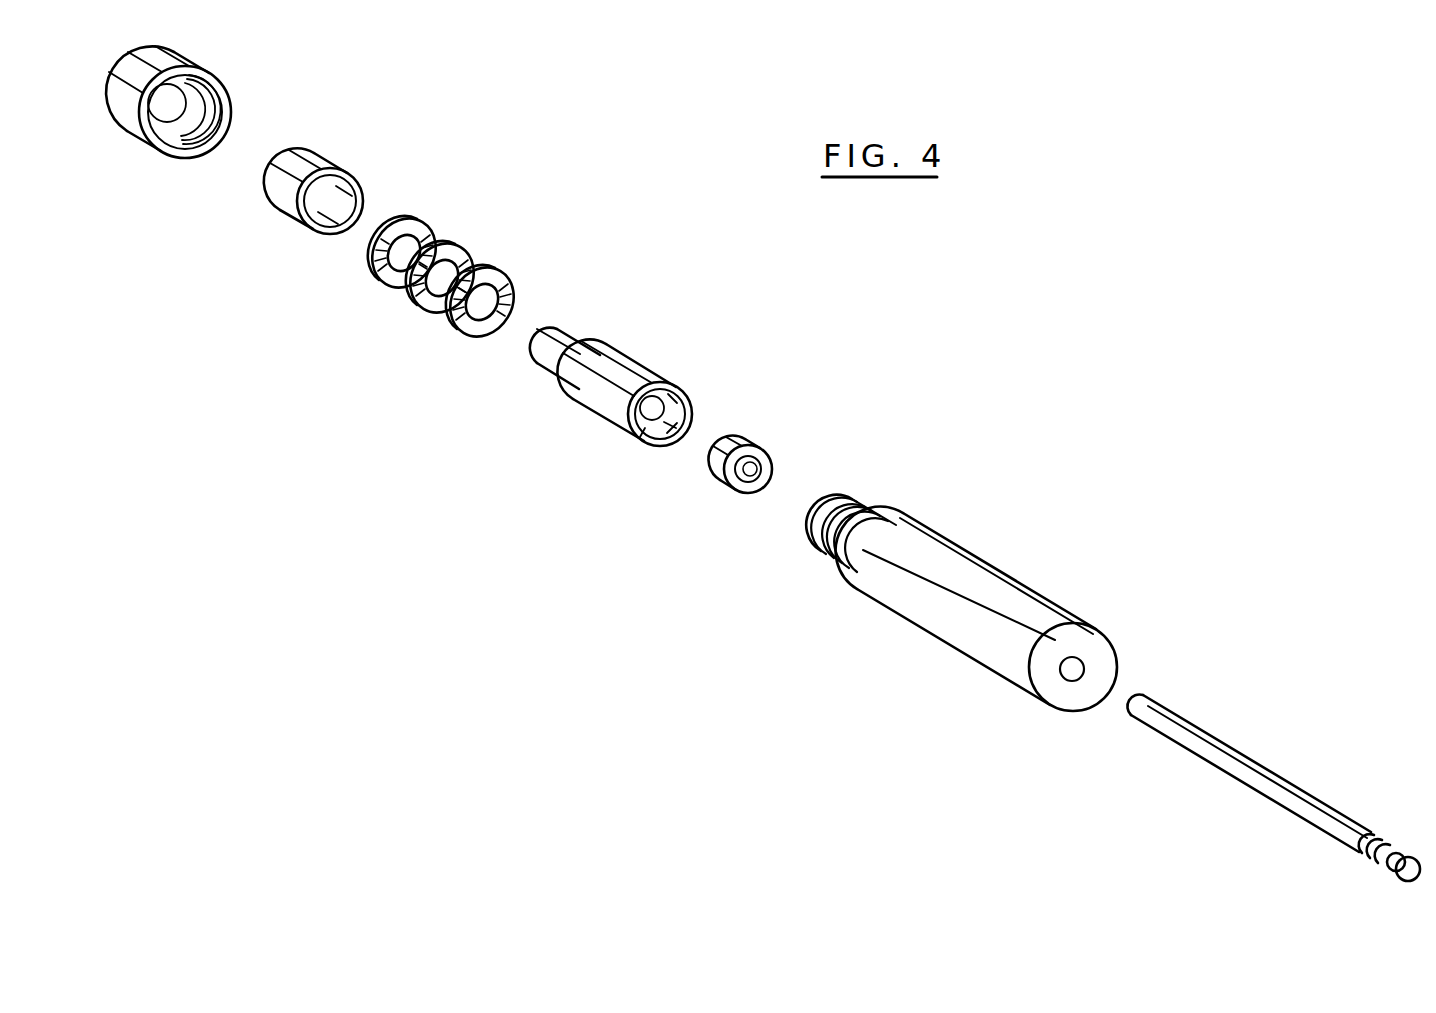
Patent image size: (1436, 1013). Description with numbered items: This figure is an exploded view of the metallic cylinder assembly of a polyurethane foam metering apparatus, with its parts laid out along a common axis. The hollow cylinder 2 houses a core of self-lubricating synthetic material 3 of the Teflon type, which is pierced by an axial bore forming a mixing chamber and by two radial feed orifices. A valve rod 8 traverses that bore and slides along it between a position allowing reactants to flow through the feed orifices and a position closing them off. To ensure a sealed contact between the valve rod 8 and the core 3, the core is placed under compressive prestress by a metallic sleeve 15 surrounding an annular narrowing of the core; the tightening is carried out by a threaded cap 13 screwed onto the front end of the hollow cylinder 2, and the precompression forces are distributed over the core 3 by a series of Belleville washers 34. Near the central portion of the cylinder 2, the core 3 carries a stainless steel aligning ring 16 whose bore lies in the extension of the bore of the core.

The threaded cap 13 is at (184, 51).
The metallic sleeve 15 is at (318, 162).
The Belleville washers 34 is at (483, 264).
The core of self-lubricating synthetic material 3 is at (632, 358).
The aligning ring 16 is at (750, 437).
The hollow cylinder 2 is at (977, 577).
The valve rod 8 is at (1230, 776).